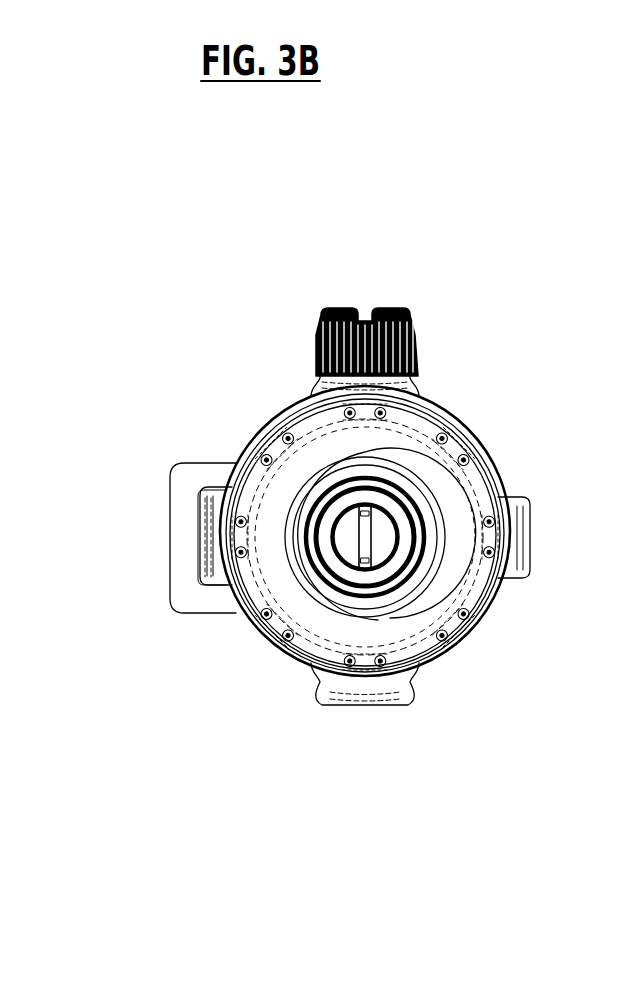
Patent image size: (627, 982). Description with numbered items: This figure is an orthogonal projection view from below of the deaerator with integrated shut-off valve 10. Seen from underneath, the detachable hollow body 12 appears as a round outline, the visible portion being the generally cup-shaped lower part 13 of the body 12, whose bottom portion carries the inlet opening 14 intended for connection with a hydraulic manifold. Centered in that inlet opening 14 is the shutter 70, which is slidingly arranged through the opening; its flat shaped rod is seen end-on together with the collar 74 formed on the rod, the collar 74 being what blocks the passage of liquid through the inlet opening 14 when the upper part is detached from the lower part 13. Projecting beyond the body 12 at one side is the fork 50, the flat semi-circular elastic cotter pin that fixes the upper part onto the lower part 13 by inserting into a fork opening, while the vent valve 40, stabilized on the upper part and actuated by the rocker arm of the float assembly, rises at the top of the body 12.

The deaerator with integrated shut-off valve 10 is at (497, 210).
The hollow body 12 is at (457, 405).
The lower part of the body 13 is at (432, 477).
The inlet opening 14 is at (509, 580).
The vent valve 40 is at (345, 308).
The fork 50 is at (176, 472).
The shutter 70 is at (354, 536).
The collar 74 is at (380, 552).